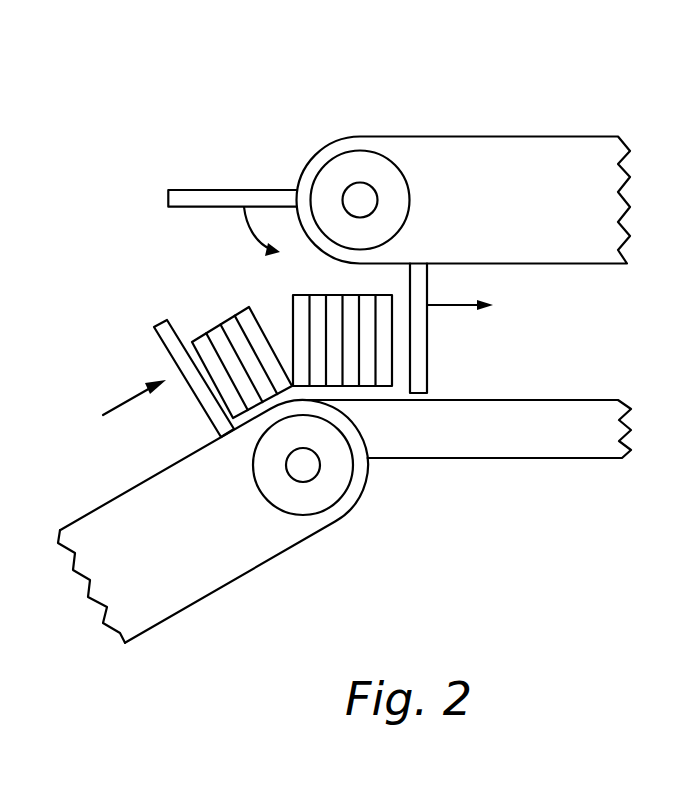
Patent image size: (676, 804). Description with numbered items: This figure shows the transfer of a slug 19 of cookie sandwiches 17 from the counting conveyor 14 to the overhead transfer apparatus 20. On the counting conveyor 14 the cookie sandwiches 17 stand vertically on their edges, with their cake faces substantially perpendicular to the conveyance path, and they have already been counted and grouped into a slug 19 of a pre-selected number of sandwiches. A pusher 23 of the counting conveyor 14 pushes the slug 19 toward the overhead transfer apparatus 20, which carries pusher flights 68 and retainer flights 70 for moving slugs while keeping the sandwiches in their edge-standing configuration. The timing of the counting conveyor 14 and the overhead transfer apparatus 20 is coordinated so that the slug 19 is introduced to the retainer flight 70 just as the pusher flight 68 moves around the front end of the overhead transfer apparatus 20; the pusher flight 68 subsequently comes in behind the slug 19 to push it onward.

The counting conveyor 14 is at (235, 577).
The overhead transfer apparatus 20 is at (530, 140).
The pusher flight 68 is at (228, 194).
The slug 19 is at (283, 279).
The cookie sandwiches 17 is at (385, 377).
The pusher 23 is at (203, 397).
The retainer flight 70 is at (420, 357).